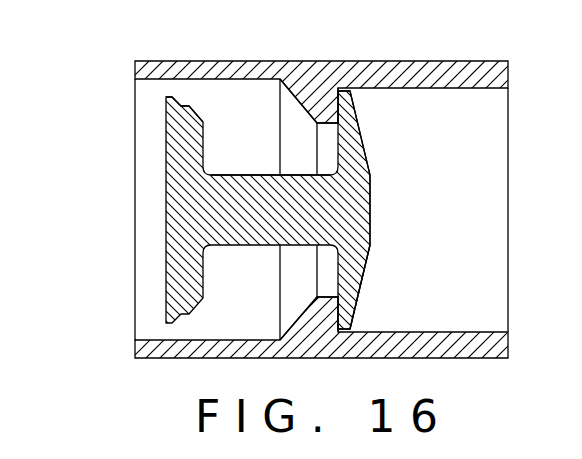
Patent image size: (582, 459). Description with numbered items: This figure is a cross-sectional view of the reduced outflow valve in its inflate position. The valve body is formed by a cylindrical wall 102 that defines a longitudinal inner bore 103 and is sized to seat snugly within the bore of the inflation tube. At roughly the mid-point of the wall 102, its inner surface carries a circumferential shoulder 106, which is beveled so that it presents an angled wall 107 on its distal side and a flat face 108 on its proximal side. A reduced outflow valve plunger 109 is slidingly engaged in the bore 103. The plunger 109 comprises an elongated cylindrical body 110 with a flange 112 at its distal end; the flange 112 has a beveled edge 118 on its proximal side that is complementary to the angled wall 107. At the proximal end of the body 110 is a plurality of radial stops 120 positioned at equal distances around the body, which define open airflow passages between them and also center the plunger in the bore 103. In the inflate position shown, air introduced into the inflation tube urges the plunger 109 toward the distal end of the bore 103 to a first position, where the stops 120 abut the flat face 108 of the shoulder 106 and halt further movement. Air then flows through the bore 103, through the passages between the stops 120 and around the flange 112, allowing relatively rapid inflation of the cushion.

The cylindrical wall 102 is at (483, 70).
The longitudinal inner bore 103 is at (432, 212).
The circumferential shoulder 106 is at (310, 330).
The angled wall 107 is at (305, 97).
The flat face 108 is at (352, 308).
The reduced outflow valve plunger 109 is at (223, 173).
The elongated cylindrical body 110 is at (238, 195).
The flange 112 is at (165, 213).
The beveled edge 118 is at (196, 110).
The radial stops 120 is at (347, 130).